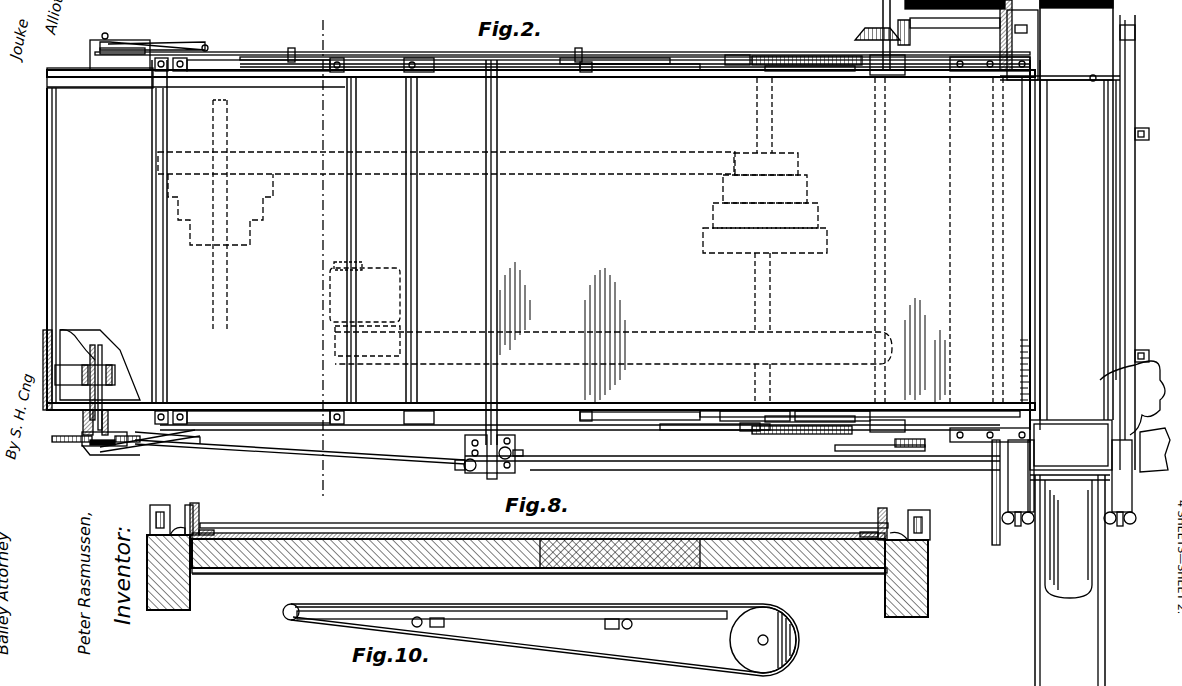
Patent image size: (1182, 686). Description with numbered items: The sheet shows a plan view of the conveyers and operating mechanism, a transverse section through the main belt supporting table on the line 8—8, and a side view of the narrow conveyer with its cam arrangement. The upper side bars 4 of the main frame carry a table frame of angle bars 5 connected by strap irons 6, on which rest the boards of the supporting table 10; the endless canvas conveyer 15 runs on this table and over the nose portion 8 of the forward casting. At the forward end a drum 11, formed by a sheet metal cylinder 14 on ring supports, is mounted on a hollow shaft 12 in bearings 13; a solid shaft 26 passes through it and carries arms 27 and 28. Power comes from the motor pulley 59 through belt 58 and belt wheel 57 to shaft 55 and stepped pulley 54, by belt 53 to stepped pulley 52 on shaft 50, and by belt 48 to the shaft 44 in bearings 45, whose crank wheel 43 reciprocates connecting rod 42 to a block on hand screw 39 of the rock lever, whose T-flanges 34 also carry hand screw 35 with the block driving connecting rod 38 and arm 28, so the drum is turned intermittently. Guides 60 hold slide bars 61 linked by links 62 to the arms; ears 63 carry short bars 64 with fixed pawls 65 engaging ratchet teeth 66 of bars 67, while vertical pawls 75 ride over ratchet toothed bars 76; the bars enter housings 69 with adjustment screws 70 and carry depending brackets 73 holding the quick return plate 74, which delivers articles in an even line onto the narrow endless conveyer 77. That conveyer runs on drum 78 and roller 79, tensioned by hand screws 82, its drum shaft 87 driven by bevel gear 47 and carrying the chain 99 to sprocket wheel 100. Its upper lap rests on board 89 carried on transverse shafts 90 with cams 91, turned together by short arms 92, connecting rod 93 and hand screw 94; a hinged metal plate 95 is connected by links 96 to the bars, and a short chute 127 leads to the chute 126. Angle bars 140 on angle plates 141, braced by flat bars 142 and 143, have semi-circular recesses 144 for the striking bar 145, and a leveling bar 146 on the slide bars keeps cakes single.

In FIG. 2, the upper side bars 4 is at (529, 78).
In FIG. 8, the upper side bars 4 is at (166, 610).
In FIG. 8, the angle bars 5 is at (210, 575).
In FIG. 8, the strap irons 6 is at (490, 578).
In FIG. 2, the nose portion 8 is at (312, 251).
In FIG. 8, the supporting table 10 is at (622, 560).
In FIG. 2, the drum 11 is at (64, 330).
In FIG. 2, the hollow shaft 12 is at (92, 340).
In FIG. 2, the bearings 13 is at (88, 57).
In FIG. 2, the sheet metal cylinder 14 is at (42, 339).
In FIG. 2, the endless canvas conveyer 15 is at (598, 262).
In FIG. 8, the endless canvas conveyer 15 is at (663, 538).
In FIG. 2, the solid shaft 26 is at (104, 355).
In FIG. 2, the arm 27 is at (122, 42).
In FIG. 2, the arm 28 is at (82, 448).
In FIG. 2, the T-flanges 34 is at (465, 451).
In FIG. 2, the hand screw 35 is at (464, 470).
In FIG. 2, the connecting rod 38 is at (248, 455).
In FIG. 2, the hand screw 39 is at (525, 451).
In FIG. 2, the connecting rod 42 is at (692, 460).
In FIG. 2, the crank wheel 43 is at (912, 452).
In FIG. 2, the shaft 44 is at (920, 270).
In FIG. 2, the bearings 45 is at (893, 59).
In FIG. 2, the bevel gear 47 is at (856, 36).
In FIG. 2, the belt 48 is at (675, 4).
In FIG. 2, the shaft 50 is at (228, 280).
In FIG. 2, the stepped pulley 52 is at (265, 216).
In FIG. 2, the belt 53 is at (585, 152).
In FIG. 2, the stepped pulley 54 is at (712, 212).
In FIG. 2, the shaft 55 is at (775, 290).
In FIG. 2, the belt wheel 57 is at (715, 332).
In FIG. 2, the belt 58 is at (552, 333).
In FIG. 2, the pulley 59 is at (765, 332).
In FIG. 2, the guides 60 is at (287, 52).
In FIG. 8, the guides 60 is at (925, 498).
In FIG. 2, the slide bars 61 is at (355, 52).
In FIG. 8, the slide bars 61 is at (940, 520).
In FIG. 2, the links 62 is at (165, 40).
In FIG. 2, the ears 63 is at (665, 58).
In FIG. 2, the short bars 64 is at (750, 55).
In FIG. 2, the fixed pawls 65 is at (797, 78).
In FIG. 2, the ratchet teeth 66 is at (828, 78).
In FIG. 2, the bars 67 is at (910, 78).
In FIG. 2, the housings 69 is at (636, 75).
In FIG. 2, the adjustment screws 70 is at (585, 72).
In FIG. 2, the depending brackets 73 is at (968, 57).
In FIG. 2, the quick return plate 74 is at (950, 190).
In FIG. 2, the vertical pawls 75 is at (762, 55).
In FIG. 2, the ratchet toothed bars 76 is at (800, 62).
In FIG. 2, the narrow endless conveyer 77 is at (1087, 235).
In FIG. 10, the narrow endless conveyer 77 is at (535, 645).
In FIG. 10, the drum 78 is at (797, 643).
In FIG. 10, the roller 79 is at (288, 620).
In FIG. 2, the hand screws 82 is at (1017, 528).
In FIG. 10, the shaft 87 is at (758, 640).
In FIG. 10, the board 89 is at (578, 616).
In FIG. 10, the transverse shafts 90 is at (420, 617).
In FIG. 10, the cams 91 is at (400, 616).
In FIG. 2, the short arms 92 is at (1135, 137).
In FIG. 2, the connecting rod 93 is at (1125, 287).
In FIG. 2, the hand screw 94 is at (1160, 385).
In FIG. 2, the metal plate 95 is at (1104, 200).
In FIG. 2, the links 96 is at (1066, 75).
In FIG. 2, the chain 99 is at (992, 474).
In FIG. 2, the sprocket wheel 100 is at (1000, 540).
In FIG. 2, the chute 126 is at (1035, 608).
In FIG. 2, the short chute 127 is at (1050, 565).
In FIG. 2, the angle bars 140 is at (274, 78).
In FIG. 8, the angle bars 140 is at (200, 510).
In FIG. 2, the angle plates 141 is at (190, 73).
In FIG. 2, the flat bar 142 is at (150, 234).
In FIG. 8, the flat bar 142 is at (370, 522).
In FIG. 2, the flat bar 143 is at (418, 216).
In FIG. 2, the semi-circular recesses 144 is at (420, 45).
In FIG. 2, the bar 145 is at (357, 196).
In FIG. 2, the leveling bar 146 is at (497, 222).